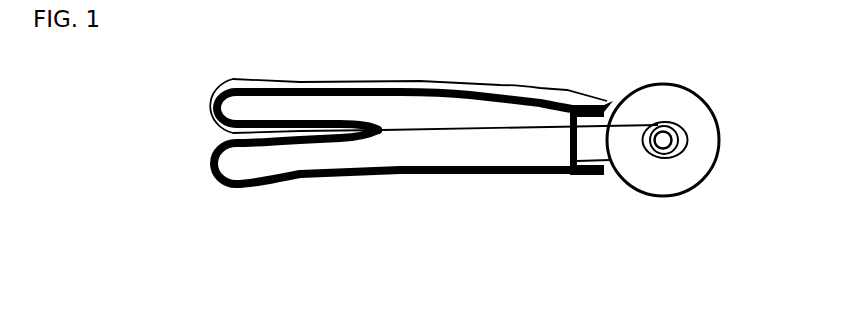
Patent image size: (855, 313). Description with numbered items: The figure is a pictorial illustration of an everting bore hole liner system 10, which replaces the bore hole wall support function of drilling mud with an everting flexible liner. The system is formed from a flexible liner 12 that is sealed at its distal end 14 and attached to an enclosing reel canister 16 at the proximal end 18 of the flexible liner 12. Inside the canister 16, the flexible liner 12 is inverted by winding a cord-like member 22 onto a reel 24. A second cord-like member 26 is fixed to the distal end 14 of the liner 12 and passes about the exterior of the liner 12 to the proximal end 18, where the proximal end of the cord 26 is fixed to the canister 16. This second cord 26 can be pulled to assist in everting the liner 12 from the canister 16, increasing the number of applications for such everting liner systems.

The flexible bore hole liner system 10 is at (443, 229).
The flexible liner 12 is at (473, 177).
The distal end 14 is at (383, 130).
The reel canister 16 is at (719, 151).
The proximal end 18 is at (588, 177).
The cord-like member 22 is at (462, 130).
The reel 24 is at (678, 125).
The second cord-like member 26 is at (225, 80).